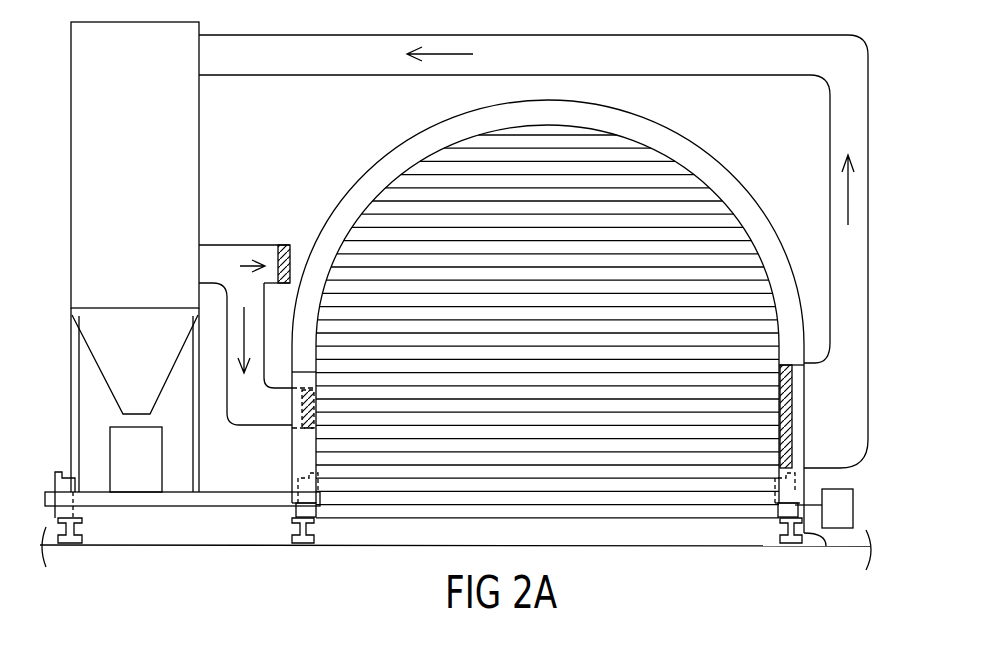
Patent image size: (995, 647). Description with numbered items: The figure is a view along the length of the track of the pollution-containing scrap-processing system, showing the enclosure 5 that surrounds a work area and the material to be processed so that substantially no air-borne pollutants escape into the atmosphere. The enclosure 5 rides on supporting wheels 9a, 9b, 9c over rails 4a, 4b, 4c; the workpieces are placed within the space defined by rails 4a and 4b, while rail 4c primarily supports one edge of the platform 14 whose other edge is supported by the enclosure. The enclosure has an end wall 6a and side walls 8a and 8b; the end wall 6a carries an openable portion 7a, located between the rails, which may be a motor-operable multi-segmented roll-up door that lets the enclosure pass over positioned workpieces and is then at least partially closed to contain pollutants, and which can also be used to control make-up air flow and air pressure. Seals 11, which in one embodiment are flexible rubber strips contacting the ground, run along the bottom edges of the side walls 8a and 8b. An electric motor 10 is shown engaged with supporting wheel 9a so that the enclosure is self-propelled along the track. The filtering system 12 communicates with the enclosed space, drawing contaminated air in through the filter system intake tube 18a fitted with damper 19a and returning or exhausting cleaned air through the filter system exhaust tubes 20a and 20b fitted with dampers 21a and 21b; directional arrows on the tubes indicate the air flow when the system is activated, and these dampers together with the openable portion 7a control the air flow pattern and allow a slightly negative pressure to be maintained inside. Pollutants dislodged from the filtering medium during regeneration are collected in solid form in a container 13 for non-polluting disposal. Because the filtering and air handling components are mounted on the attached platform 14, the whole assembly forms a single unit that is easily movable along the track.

The rail 4a is at (791, 550).
The rail 4b is at (303, 548).
The rail 4c is at (77, 549).
The enclosure 5 is at (681, 580).
The end wall 6a is at (559, 441).
The openable portion 7a is at (405, 209).
The side wall 8a is at (781, 437).
The side wall 8b is at (313, 394).
The supporting wheel 9a is at (780, 520).
The supporting wheel 9b is at (312, 519).
The supporting wheel 9c is at (76, 512).
The electric motor 10 is at (850, 524).
The seal 11 is at (289, 523).
The filtering system 12 is at (148, 171).
The container 13 is at (147, 476).
The platform 14 is at (213, 500).
The filter system intake tube 18a is at (597, 64).
The damper 19a is at (788, 405).
The filter system exhaust tube 20a is at (233, 260).
The filter system exhaust tube 20b is at (275, 421).
The damper 21a is at (292, 257).
The damper 21b is at (305, 428).